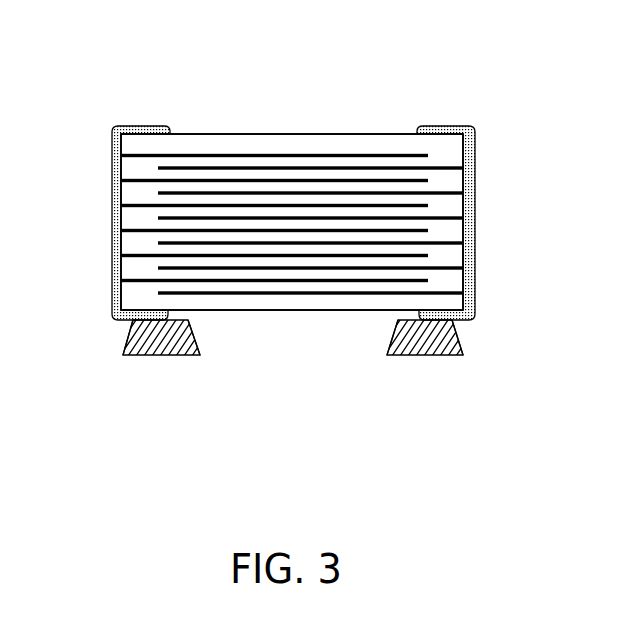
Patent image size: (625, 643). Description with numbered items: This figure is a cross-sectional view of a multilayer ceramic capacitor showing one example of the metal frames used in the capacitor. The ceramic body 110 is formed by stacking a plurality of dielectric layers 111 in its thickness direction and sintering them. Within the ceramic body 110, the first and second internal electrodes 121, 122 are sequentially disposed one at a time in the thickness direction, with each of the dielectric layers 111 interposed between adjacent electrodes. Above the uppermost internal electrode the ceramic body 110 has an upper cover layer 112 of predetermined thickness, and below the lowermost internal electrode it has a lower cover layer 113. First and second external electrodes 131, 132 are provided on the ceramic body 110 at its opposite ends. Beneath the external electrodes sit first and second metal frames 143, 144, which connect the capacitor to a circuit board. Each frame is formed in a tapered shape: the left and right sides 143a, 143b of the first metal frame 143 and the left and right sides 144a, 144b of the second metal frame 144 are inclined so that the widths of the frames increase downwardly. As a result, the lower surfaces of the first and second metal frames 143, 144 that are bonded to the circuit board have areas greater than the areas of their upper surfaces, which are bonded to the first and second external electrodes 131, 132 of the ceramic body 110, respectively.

The ceramic body 110 is at (326, 219).
The dielectric layer 111 is at (422, 188).
The upper cover layer 112 is at (282, 143).
The lower cover layer 113 is at (287, 305).
The first internal electrode 121 is at (207, 154).
The second internal electrode 122 is at (437, 170).
The first external electrode 131 is at (140, 126).
The second external electrode 132 is at (447, 126).
The first metal frame 143 is at (146, 368).
The left side of first metal frame 143a is at (133, 350).
The right side of first metal frame 143b is at (189, 323).
The second metal frame 144 is at (443, 368).
The left side of second metal frame 144a is at (460, 342).
The right side of second metal frame 144b is at (397, 322).